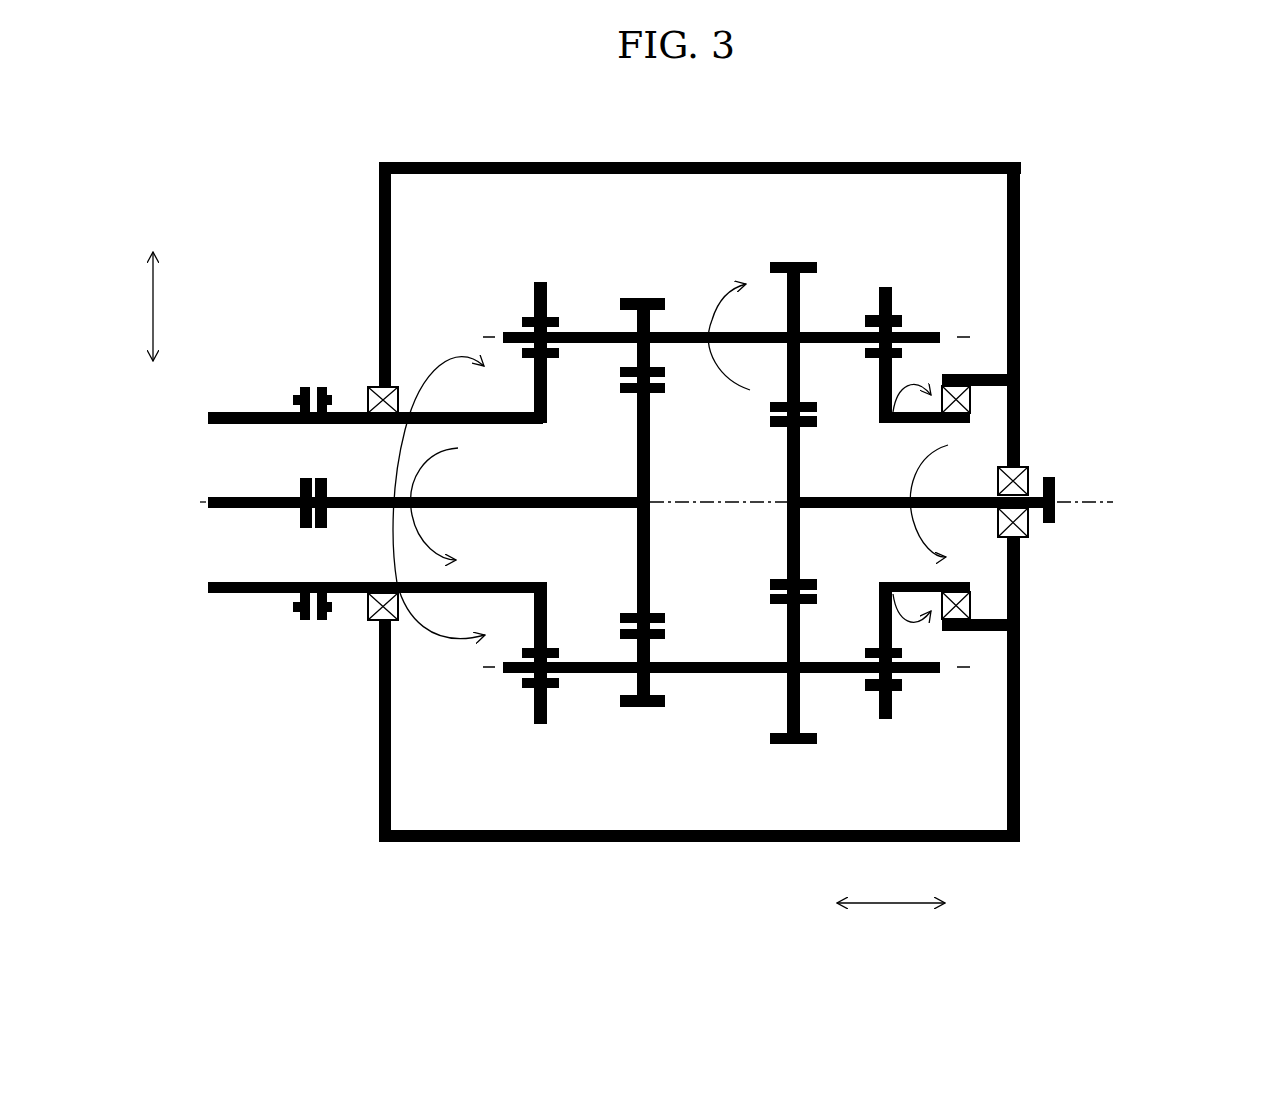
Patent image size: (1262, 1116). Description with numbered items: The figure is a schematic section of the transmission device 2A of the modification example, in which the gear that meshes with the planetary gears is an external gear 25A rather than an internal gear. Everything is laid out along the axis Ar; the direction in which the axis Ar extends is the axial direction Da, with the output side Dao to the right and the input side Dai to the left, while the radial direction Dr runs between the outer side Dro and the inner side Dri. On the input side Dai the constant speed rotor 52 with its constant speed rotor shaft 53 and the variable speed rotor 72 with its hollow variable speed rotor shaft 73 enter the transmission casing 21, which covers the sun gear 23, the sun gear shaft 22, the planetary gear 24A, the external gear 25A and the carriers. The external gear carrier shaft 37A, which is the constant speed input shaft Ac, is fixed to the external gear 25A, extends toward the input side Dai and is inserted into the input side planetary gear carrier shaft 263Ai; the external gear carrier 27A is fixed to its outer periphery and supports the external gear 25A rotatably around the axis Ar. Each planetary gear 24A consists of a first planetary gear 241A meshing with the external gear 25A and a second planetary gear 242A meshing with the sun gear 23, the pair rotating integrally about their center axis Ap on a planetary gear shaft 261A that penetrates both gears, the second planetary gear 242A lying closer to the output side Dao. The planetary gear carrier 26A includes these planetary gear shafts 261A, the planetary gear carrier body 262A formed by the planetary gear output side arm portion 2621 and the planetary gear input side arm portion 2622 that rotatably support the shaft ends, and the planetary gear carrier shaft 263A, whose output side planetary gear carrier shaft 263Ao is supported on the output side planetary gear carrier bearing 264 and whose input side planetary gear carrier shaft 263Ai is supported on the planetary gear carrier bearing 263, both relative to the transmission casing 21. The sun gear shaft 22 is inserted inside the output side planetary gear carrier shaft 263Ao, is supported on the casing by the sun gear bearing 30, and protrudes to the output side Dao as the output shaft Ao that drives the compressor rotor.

The transmission device 2A is at (518, 156).
The transmission casing 21 is at (1026, 763).
The sun gear shaft 22 is at (977, 493).
The output shaft Ao is at (977, 493).
The sun gear 23 is at (541, 557).
The planetary gear 24A is at (875, 508).
The first planetary gear 241A is at (666, 508).
The second planetary gear 242A is at (801, 282).
The external gear 25A is at (652, 568).
The planetary gear carrier 26A is at (524, 298).
The planetary gear shaft 261A is at (693, 330).
The planetary gear carrier body 262A is at (786, 549).
The planetary gear output side arm portion 2621 is at (892, 297).
The planetary gear input side arm portion 2622 is at (499, 698).
The planetary gear carrier bearing 263 is at (368, 385).
The planetary gear carrier shaft 263A is at (702, 453).
The input side planetary gear carrier shaft 263Ai is at (294, 453).
The output side planetary gear carrier shaft 263Ao is at (1050, 513).
The output side planetary gear carrier bearing 264 is at (972, 403).
The external gear carrier 27A is at (362, 518).
The sun gear bearing 30 is at (1030, 475).
The external gear carrier shaft 37A is at (499, 698).
The constant speed input shaft Ac is at (525, 508).
The center axis Ap is at (797, 499).
The axis Ar is at (1080, 500).
The constant speed rotor 52 is at (360, 600).
The constant speed rotor shaft 53 is at (245, 508).
The variable speed rotor 72 is at (367, 368).
The variable speed rotor shaft 73 is at (253, 410).
The radial direction Dr is at (149, 306).
The outer side in the radial direction Dro is at (155, 235).
The inner side in the radial direction Dri is at (153, 377).
The axial direction Da is at (891, 897).
The input side Dai is at (807, 905).
The output side Dao is at (972, 905).